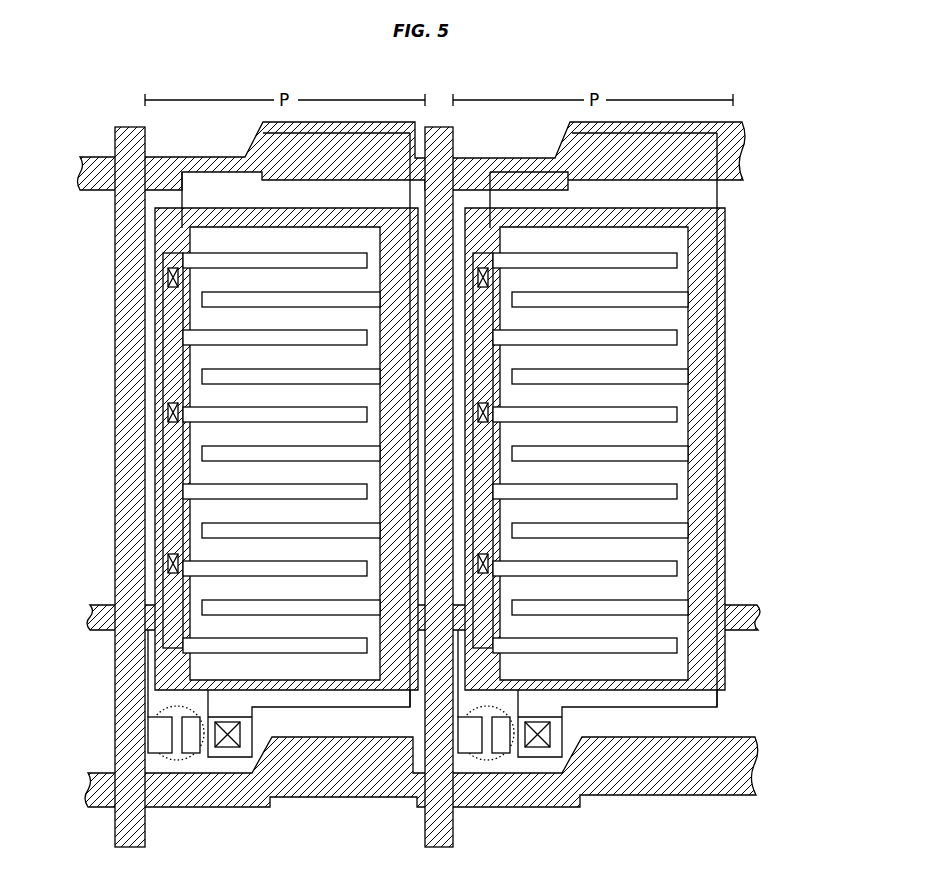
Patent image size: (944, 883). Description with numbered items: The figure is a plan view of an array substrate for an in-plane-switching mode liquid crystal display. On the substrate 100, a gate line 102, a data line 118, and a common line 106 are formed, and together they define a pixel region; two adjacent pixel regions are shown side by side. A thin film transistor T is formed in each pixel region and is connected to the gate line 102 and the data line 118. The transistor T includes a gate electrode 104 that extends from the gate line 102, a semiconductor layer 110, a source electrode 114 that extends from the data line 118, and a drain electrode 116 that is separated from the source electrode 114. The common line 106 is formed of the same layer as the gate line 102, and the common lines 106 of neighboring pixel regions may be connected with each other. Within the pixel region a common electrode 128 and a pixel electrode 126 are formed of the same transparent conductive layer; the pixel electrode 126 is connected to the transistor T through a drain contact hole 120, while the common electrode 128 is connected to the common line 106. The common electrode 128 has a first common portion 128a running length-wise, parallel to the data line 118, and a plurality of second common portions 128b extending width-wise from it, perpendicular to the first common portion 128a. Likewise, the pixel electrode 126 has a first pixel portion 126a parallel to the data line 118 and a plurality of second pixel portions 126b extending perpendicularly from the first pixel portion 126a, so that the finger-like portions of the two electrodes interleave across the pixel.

The substrate 100 is at (805, 784).
The gate line 102 is at (690, 797).
The gate electrode 104 is at (186, 705).
The common line 106 is at (190, 477).
The semiconductor layer 110 is at (178, 757).
The source electrode 114 is at (162, 757).
The drain electrode 116 is at (233, 750).
The data line 118 is at (122, 128).
The drain contact hole 120 is at (250, 723).
The pixel electrode 126 is at (675, 453).
The first pixel portion 126a is at (688, 395).
The second pixel portions 126b is at (670, 364).
The common electrode 128 is at (187, 453).
The first common portion 128a is at (183, 355).
The second common portions 128b is at (206, 326).
The TFT T is at (195, 757).